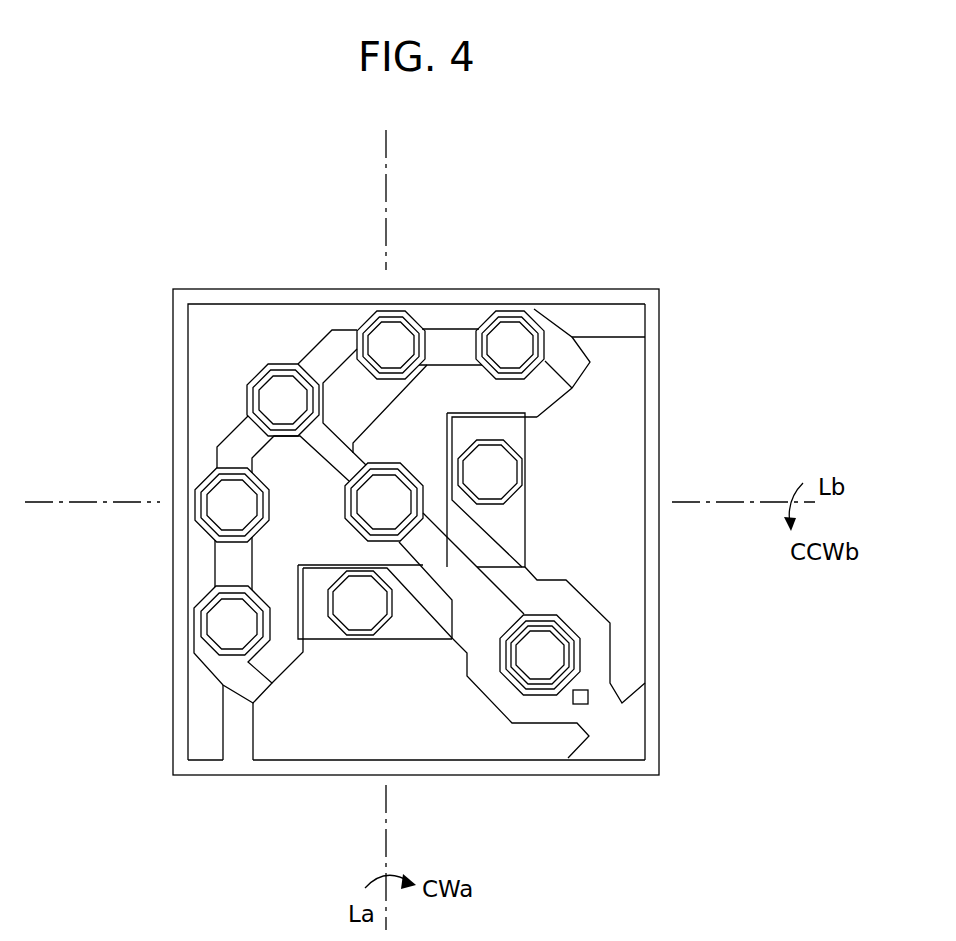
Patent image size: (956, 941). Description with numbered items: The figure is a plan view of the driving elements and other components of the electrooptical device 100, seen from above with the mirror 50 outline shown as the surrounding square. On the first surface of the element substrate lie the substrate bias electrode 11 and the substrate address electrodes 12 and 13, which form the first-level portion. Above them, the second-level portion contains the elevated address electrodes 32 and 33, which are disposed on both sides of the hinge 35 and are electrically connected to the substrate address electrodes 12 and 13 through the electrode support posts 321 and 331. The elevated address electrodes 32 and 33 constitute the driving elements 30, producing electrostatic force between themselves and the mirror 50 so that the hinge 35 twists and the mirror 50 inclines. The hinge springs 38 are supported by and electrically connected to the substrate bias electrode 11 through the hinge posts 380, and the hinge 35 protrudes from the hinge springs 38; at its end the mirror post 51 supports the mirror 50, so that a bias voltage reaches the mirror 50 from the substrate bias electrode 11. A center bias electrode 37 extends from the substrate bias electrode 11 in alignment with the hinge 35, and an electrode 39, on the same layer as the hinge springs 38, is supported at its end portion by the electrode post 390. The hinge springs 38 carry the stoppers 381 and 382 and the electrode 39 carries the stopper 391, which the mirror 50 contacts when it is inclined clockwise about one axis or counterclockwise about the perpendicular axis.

The electrooptical device 100 is at (436, 530).
The substrate bias electrode 11 is at (212, 376).
The substrate address electrode 12 is at (637, 442).
The substrate address electrode 13 is at (353, 747).
The mirror 50 is at (543, 288).
The driving element 30 is at (442, 631).
The elevated address electrode 32 is at (608, 558).
The elevated address electrode 33 is at (380, 701).
The hinge 35 is at (347, 417).
The center bias electrode 37 is at (505, 605).
The hinge spring 38 is at (471, 532).
The electrode 39 is at (624, 732).
The mirror post 51 is at (357, 507).
The electrode support post 321 is at (518, 476).
The electrode support post 331 is at (357, 628).
The hinge post 380 is at (397, 315).
The stopper 381 is at (578, 362).
The stopper 382 is at (245, 688).
The electrode post 390 is at (573, 647).
The stopper 391 is at (590, 700).